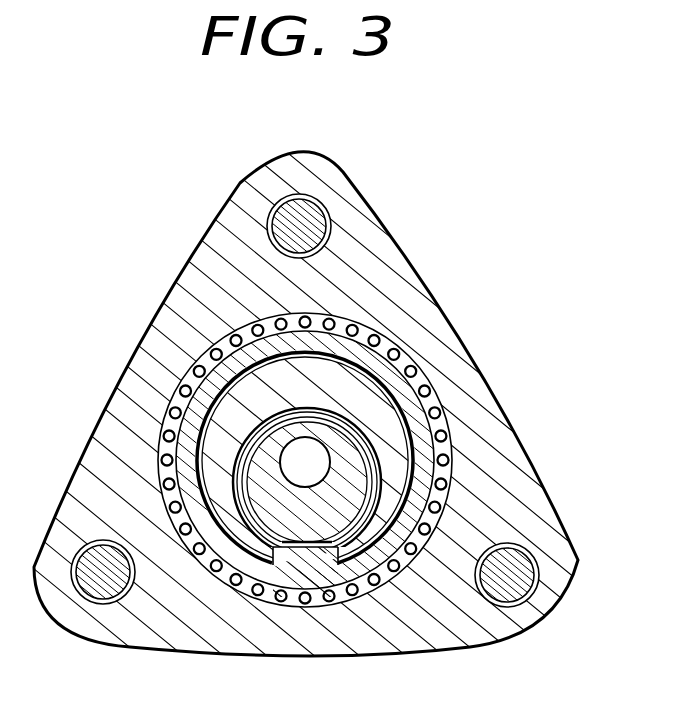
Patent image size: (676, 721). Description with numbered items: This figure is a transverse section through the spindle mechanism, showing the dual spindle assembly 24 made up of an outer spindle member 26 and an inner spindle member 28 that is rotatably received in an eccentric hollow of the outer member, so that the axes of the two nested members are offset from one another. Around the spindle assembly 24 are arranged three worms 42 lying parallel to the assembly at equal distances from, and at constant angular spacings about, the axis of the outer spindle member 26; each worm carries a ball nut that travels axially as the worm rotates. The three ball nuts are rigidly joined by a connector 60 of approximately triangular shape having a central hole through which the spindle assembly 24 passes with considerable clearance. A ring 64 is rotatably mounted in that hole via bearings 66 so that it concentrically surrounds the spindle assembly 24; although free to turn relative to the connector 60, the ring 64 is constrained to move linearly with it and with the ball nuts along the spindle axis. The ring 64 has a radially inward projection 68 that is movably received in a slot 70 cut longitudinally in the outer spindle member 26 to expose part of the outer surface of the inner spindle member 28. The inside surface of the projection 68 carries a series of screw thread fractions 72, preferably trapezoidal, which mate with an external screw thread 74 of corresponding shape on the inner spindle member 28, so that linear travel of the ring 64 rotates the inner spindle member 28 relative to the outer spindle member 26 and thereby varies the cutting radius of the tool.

The dual spindle assembly 24 is at (420, 412).
The outer spindle member 26 is at (406, 478).
The inner spindle member 28 is at (340, 443).
The worms 42 is at (320, 206).
The connector 60 is at (400, 255).
The ring 64 is at (217, 550).
The bearings 66 is at (251, 327).
The radially inward projection 68 is at (295, 567).
The slot 70 is at (330, 558).
The screw thread fractions 72 is at (300, 548).
The external screw thread 74 is at (405, 553).